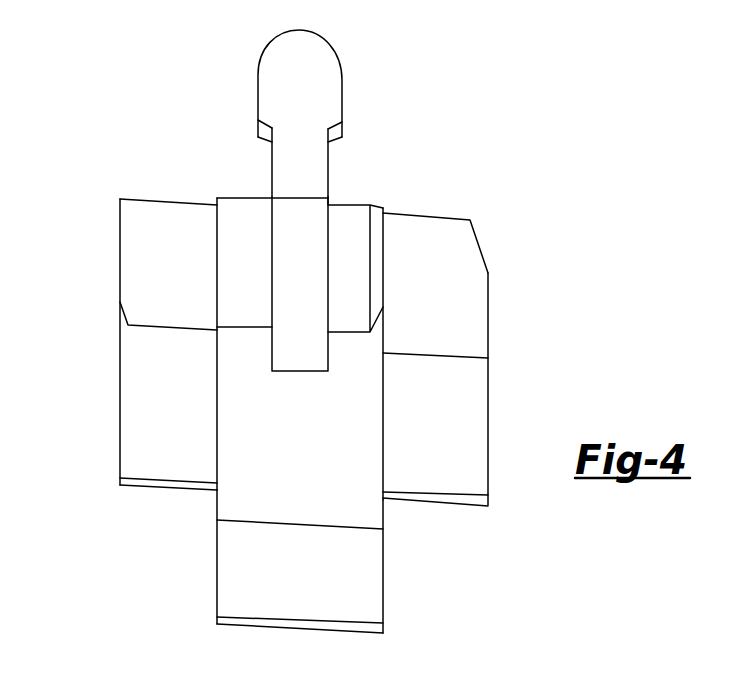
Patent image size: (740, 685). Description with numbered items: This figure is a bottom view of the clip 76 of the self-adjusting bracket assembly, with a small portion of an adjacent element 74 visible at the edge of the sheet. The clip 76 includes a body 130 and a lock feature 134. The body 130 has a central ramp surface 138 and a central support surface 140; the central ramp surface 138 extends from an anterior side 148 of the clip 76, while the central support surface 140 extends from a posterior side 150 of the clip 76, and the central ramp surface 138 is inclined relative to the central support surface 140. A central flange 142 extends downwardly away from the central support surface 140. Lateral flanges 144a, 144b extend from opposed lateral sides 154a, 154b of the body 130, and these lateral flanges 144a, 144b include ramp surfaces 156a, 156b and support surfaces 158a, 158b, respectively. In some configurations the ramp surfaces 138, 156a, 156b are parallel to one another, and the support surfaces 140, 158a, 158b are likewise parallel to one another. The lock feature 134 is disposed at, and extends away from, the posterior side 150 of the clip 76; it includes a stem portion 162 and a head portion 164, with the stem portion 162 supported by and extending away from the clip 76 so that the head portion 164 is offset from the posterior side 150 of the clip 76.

The clip 76 is at (460, 192).
The housing 74 is at (640, 684).
The body 130 is at (217, 407).
The lock feature 134 is at (277, 83).
The central ramp surface 138 is at (318, 491).
The central support surface 140 is at (258, 281).
The central flange 142 is at (305, 251).
The lateral flange 144a is at (488, 303).
The lateral flange 144b is at (120, 252).
The anterior side 148 is at (252, 627).
The posterior side 150 is at (348, 205).
The lateral side 154a is at (383, 517).
The lateral side 154b is at (217, 507).
The ramp surface 156a is at (465, 444).
The ramp surface 156b is at (192, 451).
The support surface 158a is at (457, 331).
The support surface 158b is at (190, 292).
The stem portion 162 is at (272, 162).
The head portion 164 is at (340, 83).